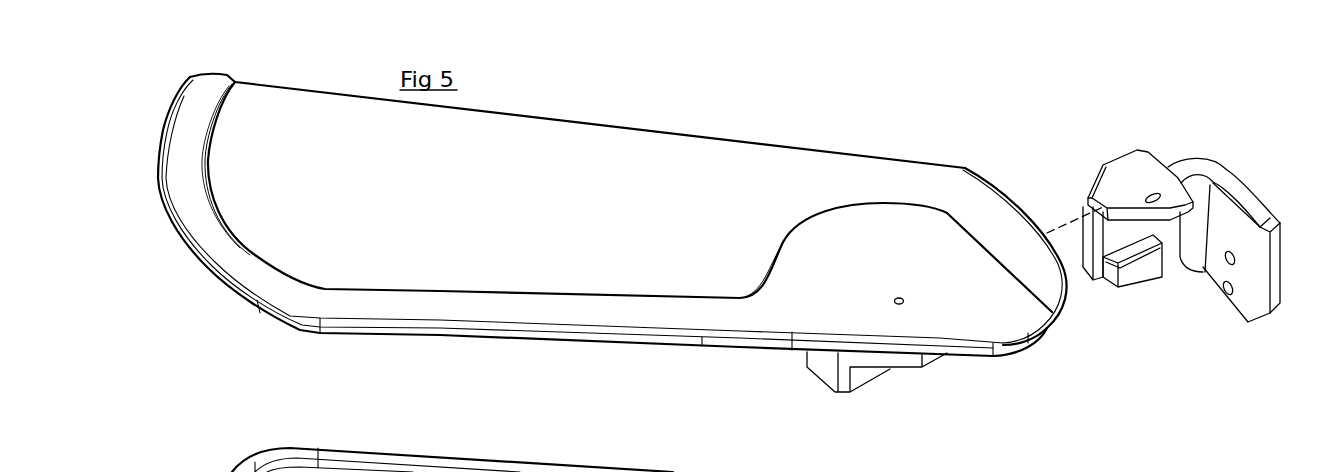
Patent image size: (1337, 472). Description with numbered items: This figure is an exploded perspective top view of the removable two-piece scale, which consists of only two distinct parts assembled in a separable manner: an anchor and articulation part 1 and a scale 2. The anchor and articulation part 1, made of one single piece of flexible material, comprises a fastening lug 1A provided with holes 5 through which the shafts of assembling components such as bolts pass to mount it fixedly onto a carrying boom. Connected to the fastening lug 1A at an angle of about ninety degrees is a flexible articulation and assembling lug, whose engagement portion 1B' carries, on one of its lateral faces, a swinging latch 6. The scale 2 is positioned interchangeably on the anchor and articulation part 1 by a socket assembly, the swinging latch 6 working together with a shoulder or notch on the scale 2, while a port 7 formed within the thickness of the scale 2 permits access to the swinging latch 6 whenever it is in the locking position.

The anchor and articulation part 1 is at (1206, 229).
The fastening lug 1A is at (1230, 228).
The engagement portion 1B' is at (1140, 155).
The scale 2 is at (568, 172).
The holes 5 is at (1227, 290).
The swinging latch 6 is at (1147, 267).
The port 7 is at (903, 295).